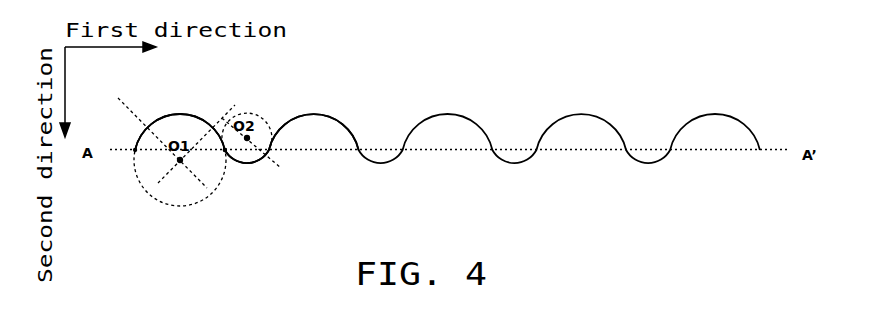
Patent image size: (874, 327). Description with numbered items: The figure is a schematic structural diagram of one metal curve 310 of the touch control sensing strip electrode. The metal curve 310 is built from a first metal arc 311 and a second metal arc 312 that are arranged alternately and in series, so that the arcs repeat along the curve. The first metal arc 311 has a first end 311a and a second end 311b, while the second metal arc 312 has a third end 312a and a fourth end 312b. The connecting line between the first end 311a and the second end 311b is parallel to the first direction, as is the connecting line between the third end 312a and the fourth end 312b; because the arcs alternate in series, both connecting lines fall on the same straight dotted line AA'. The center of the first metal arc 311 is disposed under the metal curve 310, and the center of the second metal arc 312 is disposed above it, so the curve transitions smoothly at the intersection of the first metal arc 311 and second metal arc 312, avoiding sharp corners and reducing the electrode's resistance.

The metal curve 310 is at (710, 93).
The first metal arc 311 is at (176, 114).
The first end 311a is at (136, 146).
The second end 311b is at (225, 153).
The second metal arc 312 is at (252, 162).
The third end 312a is at (224, 150).
The fourth end 312b is at (272, 128).